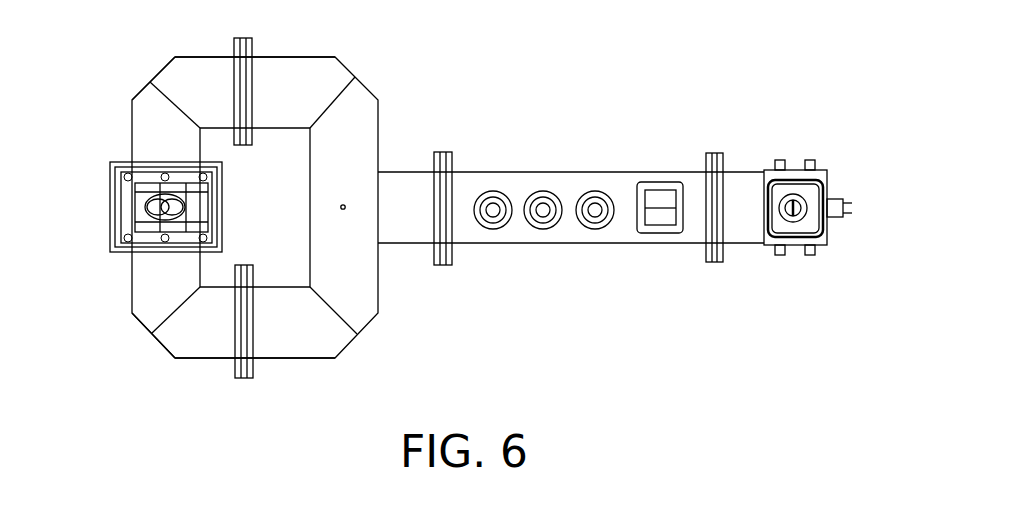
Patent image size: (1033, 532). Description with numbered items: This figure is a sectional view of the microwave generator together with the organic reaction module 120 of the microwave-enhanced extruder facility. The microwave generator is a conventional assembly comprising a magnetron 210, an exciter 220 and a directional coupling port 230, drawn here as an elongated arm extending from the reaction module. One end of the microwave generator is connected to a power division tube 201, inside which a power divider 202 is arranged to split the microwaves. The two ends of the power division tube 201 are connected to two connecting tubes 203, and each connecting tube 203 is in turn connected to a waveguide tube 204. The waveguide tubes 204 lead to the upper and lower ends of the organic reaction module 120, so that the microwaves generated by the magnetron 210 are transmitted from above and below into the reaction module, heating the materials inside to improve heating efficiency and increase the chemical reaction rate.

The organic reaction module 120 is at (110, 195).
The power division tube 201 is at (355, 78).
The power divider 202 is at (346, 205).
The connecting tube 203 is at (292, 57).
The waveguide tube 204 is at (137, 95).
The magnetron 210 is at (790, 168).
The exciter 220 is at (745, 223).
The directional coupling port 230 is at (660, 195).